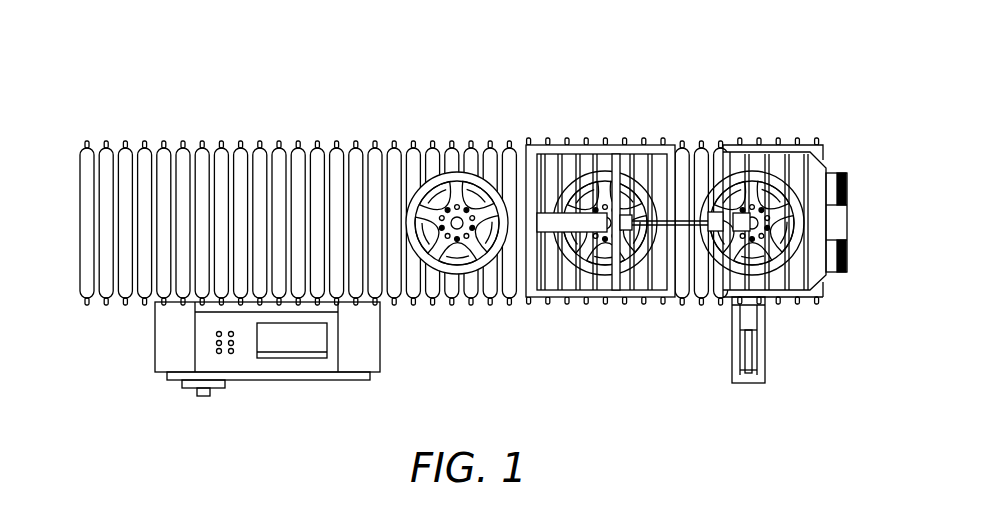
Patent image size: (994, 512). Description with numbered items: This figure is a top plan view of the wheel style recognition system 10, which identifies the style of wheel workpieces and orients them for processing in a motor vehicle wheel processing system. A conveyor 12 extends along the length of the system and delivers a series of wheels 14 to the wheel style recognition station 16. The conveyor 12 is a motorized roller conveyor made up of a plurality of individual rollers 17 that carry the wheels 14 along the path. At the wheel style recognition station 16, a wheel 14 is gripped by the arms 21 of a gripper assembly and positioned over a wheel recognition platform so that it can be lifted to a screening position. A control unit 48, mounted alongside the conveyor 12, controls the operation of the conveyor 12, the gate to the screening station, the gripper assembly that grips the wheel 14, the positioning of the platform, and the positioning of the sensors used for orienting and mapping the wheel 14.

The wheel style recognition system 10 is at (654, 100).
The conveyor 12 is at (72, 188).
The wheels 14 is at (467, 172).
The wheel style recognition station 16 is at (695, 310).
The rollers 17 is at (452, 302).
The arms 21 is at (826, 166).
The control unit 48 is at (128, 347).